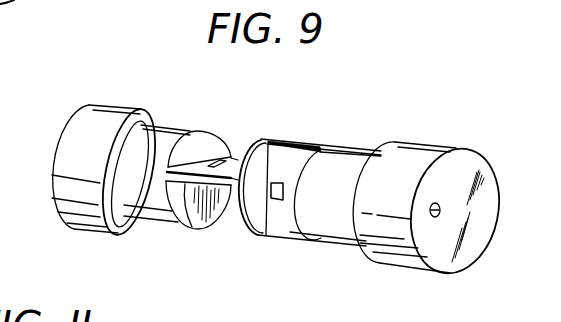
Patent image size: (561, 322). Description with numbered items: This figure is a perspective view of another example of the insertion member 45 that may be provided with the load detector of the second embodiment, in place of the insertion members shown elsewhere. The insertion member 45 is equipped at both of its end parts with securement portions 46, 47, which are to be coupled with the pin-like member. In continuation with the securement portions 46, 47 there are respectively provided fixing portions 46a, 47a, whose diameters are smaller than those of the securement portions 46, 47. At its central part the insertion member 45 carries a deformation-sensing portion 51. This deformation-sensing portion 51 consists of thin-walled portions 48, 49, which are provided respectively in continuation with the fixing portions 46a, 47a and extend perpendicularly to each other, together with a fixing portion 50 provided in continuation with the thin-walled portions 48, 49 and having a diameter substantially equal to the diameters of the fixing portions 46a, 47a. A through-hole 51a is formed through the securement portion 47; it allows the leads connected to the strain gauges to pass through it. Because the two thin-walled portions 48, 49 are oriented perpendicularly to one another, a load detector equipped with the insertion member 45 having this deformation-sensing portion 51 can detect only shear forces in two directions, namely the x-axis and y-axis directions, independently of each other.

The insertion member 45 is at (347, 128).
The securement portion 46 is at (107, 103).
The fixing portion 46a is at (192, 131).
The securement portion 47 is at (443, 147).
The fixing portion 47a is at (376, 151).
The thin-walled portion 48 is at (188, 228).
The thin-walled portion 49 is at (298, 234).
The fixing portion 50 is at (243, 228).
The deformation-sensing portion 51 is at (295, 140).
The through-hole 51a is at (441, 214).